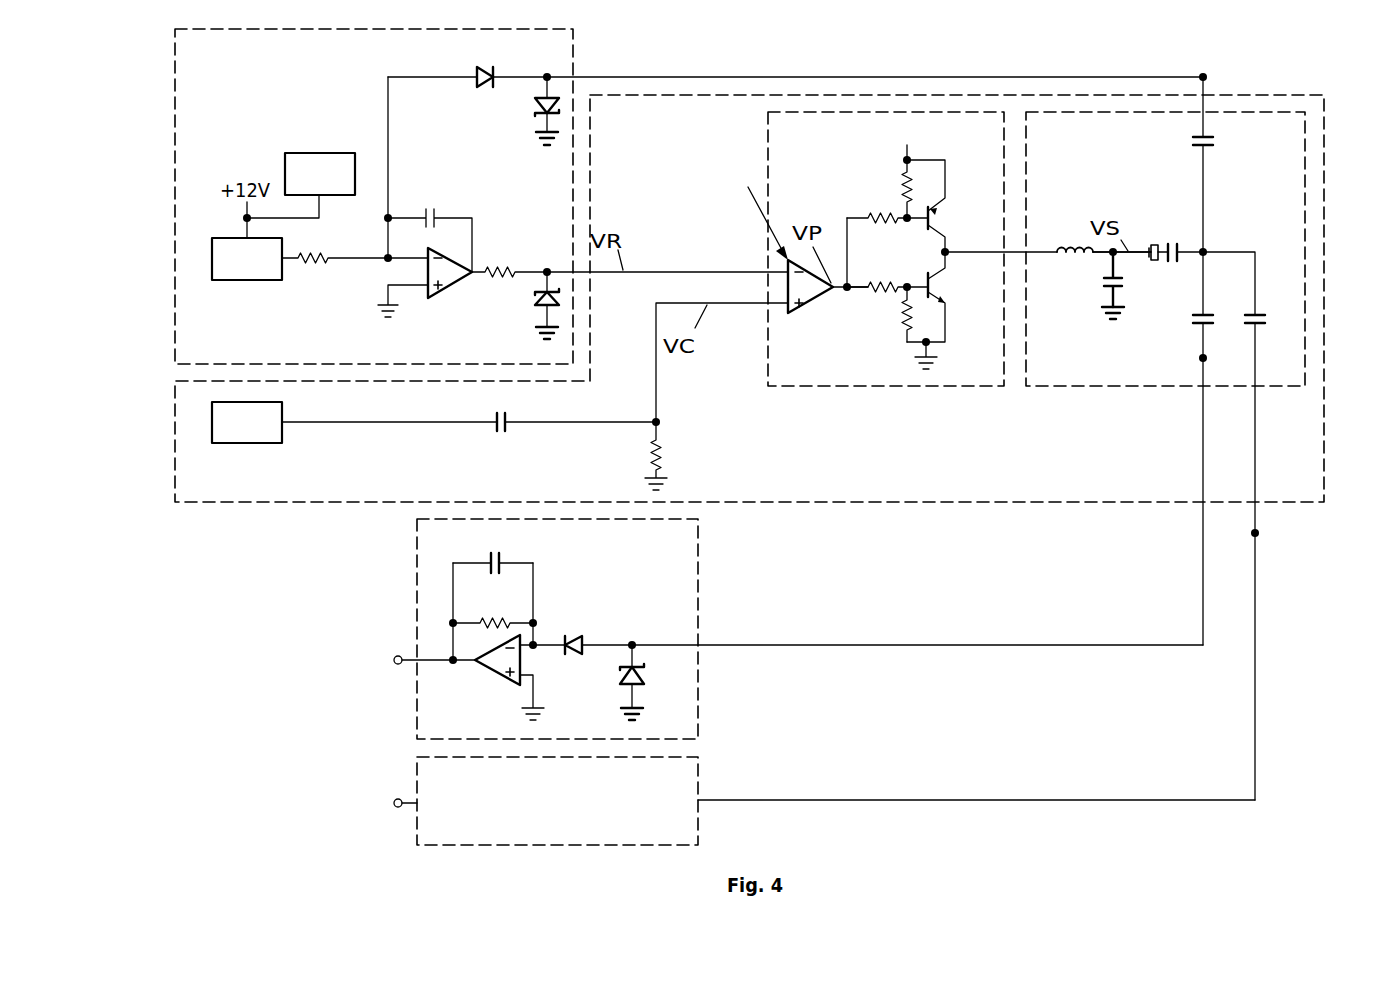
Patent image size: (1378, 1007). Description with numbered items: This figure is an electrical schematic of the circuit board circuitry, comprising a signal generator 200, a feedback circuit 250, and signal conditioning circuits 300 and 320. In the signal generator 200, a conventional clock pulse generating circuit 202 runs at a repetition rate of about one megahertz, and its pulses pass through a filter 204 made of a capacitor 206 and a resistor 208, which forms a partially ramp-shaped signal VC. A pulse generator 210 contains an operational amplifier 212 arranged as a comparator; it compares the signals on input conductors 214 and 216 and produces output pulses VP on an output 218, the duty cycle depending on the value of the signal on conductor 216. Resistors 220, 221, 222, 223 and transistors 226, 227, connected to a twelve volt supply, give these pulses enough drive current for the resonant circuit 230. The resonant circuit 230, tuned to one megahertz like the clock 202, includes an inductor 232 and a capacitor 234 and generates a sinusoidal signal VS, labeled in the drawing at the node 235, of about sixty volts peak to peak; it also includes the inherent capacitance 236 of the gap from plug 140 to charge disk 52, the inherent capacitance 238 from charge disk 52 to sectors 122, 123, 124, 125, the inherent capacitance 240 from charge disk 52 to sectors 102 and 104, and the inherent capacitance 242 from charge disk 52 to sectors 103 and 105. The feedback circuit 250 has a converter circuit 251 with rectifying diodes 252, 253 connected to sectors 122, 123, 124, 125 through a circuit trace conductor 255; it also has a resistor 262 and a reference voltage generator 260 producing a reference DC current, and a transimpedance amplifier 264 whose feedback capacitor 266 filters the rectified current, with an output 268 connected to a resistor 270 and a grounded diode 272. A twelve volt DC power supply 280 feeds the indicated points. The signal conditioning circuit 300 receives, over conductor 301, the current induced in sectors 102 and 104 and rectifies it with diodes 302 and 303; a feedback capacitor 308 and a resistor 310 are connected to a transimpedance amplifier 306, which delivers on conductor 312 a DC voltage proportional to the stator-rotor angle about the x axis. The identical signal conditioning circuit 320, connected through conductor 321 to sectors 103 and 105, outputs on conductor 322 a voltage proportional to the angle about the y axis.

The feedback circuit 250 is at (575, 53).
The rectifying diode 253 is at (478, 68).
The converter circuit 251 is at (466, 114).
The rectifying diode 252 is at (535, 107).
The 12 volt DC power supply 280 is at (318, 150).
The reference voltage generator 260 is at (247, 282).
The resistor 262 is at (322, 253).
The transimpedance amplifier 264 is at (442, 297).
The feedback capacitor 266 is at (442, 192).
The output 268 is at (477, 266).
The resistor 270 is at (510, 268).
The grounded diode 272 is at (533, 303).
The signal generator 200 is at (999, 507).
The circuit trace conductor 255 is at (1017, 75).
The sector 122 is at (1257, 90).
The sector 123 is at (1257, 90).
The sector 124 is at (1257, 90).
The sector 125 is at (1206, 75).
The input conductor 216 is at (657, 268).
The input conductor 214 is at (727, 305).
The pulse generator 210 is at (987, 390).
The operational amplifier 212 is at (803, 304).
The output 218 is at (838, 277).
The resistor 220 is at (877, 212).
The resistor 221 is at (898, 177).
The resistor 222 is at (878, 280).
The resistor 223 is at (902, 322).
The transistor 226 is at (958, 205).
The transistor 227 is at (937, 289).
The resonant circuit 230 is at (1069, 390).
The inductor 232 is at (1080, 242).
The capacitor 234 is at (1103, 280).
The sensor voltage line VS 235 is at (1138, 255).
The plug 140 is at (1152, 243).
The inherent capacitance 236 is at (1172, 242).
The charge disk 52 is at (1206, 247).
The inherent capacitance 238 is at (1213, 143).
The inherent capacitance 240 is at (1193, 318).
The sector 102 is at (1130, 363).
The sector 104 is at (1200, 358).
The conductor 301 is at (1198, 443).
The inherent capacitance 242 is at (1267, 297).
The conductor 321 is at (1252, 670).
The sector 103 is at (1304, 550).
The sector 105 is at (1260, 537).
The filter 204 is at (598, 452).
The clock pulse generating circuit 202 is at (283, 443).
The capacitor 206 is at (495, 415).
The resistor 208 is at (663, 447).
The signal conditioning circuit 300 is at (700, 602).
The conductor 312 is at (395, 658).
The transimpedance amplifier 306 is at (502, 676).
The resistor 310 is at (495, 618).
The feedback capacitor 308 is at (502, 556).
The diode 303 is at (577, 633).
The diode 302 is at (620, 682).
The signal conditioning circuit 320 is at (700, 780).
The conductor 322 is at (395, 801).